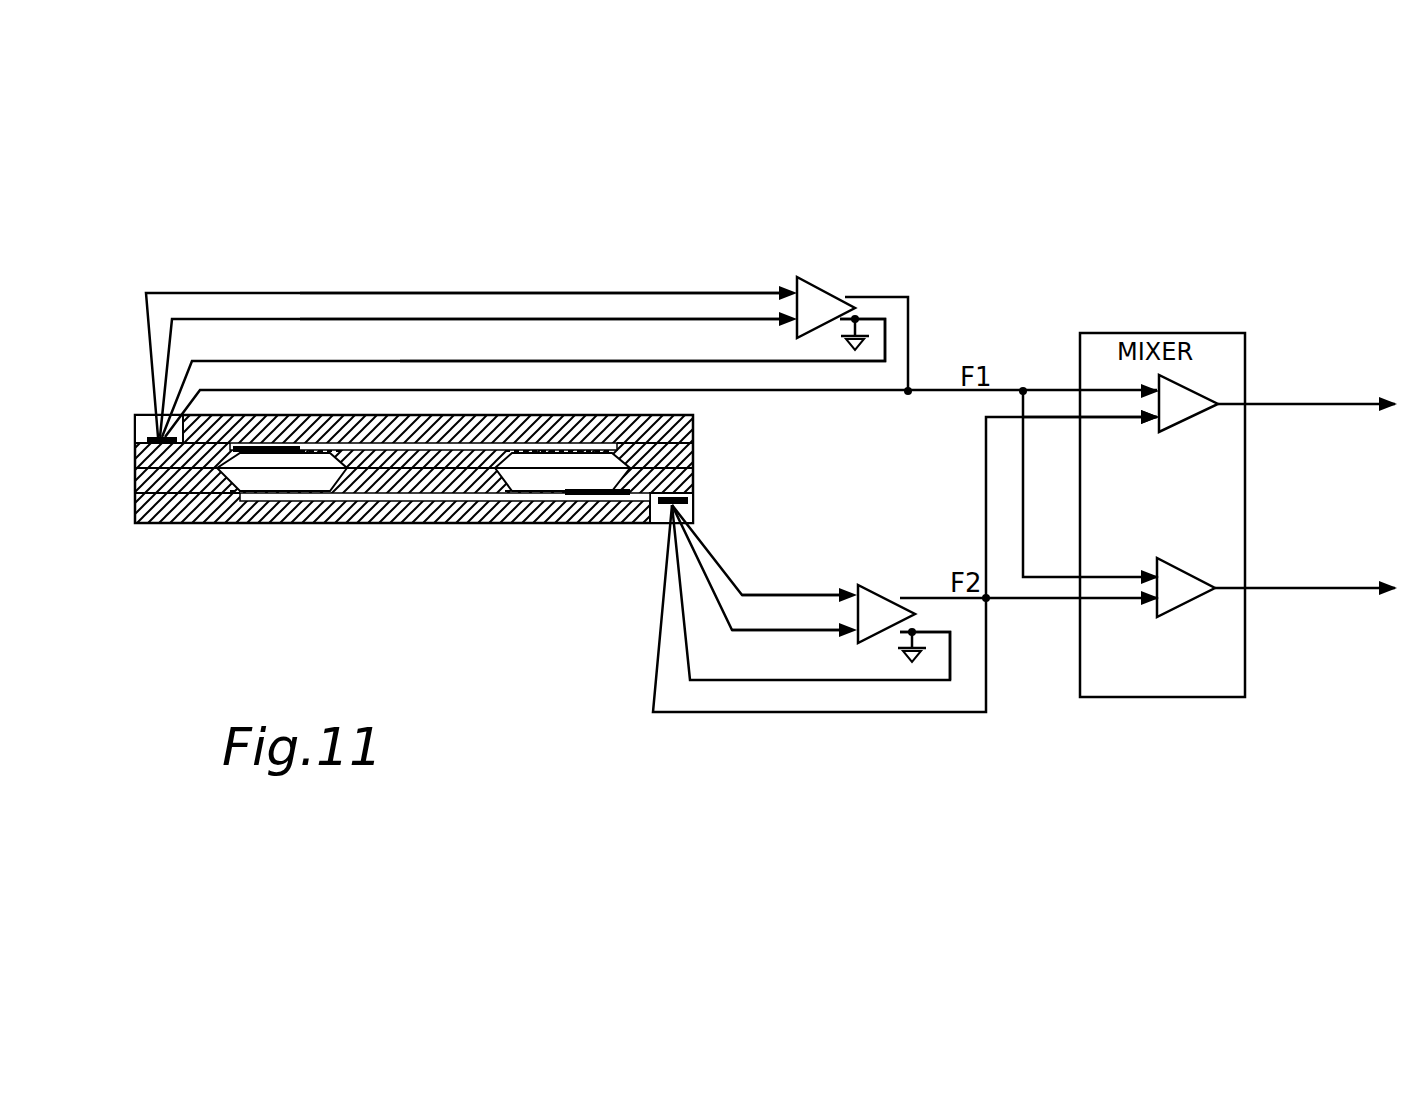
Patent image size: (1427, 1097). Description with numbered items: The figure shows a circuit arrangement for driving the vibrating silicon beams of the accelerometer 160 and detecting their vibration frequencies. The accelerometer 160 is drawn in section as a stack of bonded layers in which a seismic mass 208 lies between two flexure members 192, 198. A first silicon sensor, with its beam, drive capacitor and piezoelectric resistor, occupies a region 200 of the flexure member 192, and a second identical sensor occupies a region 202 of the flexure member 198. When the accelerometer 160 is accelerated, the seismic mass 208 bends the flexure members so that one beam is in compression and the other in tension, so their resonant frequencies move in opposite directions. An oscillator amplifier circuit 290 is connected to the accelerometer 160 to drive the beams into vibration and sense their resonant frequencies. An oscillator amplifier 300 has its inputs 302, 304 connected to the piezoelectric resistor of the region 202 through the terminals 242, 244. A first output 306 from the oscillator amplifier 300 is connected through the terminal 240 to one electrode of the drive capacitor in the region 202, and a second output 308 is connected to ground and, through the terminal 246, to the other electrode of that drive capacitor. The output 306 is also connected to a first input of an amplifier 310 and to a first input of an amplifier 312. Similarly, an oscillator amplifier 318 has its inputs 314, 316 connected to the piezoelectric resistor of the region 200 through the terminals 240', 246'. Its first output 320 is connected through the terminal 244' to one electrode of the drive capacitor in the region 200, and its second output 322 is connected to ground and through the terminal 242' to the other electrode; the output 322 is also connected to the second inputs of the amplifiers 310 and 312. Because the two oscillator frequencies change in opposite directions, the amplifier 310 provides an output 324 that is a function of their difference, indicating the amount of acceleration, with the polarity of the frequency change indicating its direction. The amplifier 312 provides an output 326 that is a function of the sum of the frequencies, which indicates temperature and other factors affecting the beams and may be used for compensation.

The accelerometer 160 is at (336, 556).
The flexure member 192 is at (520, 492).
The flexure member 198 is at (300, 446).
The region 200 is at (598, 496).
The region 202 is at (265, 480).
The seismic mass 208 is at (425, 478).
The terminal 240 is at (662, 484).
The terminal 242 is at (433, 380).
The terminal 244 is at (436, 361).
The terminal 246 is at (523, 378).
The terminal 240' is at (764, 550).
The terminal 242' is at (805, 647).
The terminal 244' is at (867, 591).
The terminal 246' is at (764, 587).
The oscillator amplifier circuit 290 is at (1030, 232).
The oscillator amplifier 300 is at (815, 290).
The input 302 is at (600, 293).
The input 304 is at (618, 319).
The first output 306 is at (895, 297).
The second output 308 is at (910, 345).
The amplifier 310 is at (1168, 430).
The amplifier 312 is at (1178, 572).
The input 314 is at (785, 592).
The input 316 is at (765, 633).
The oscillator amplifier 318 is at (880, 590).
The first output 320 is at (910, 597).
The second output 322 is at (955, 652).
The output 324 is at (1260, 406).
The sum frequency output 326 is at (1256, 590).